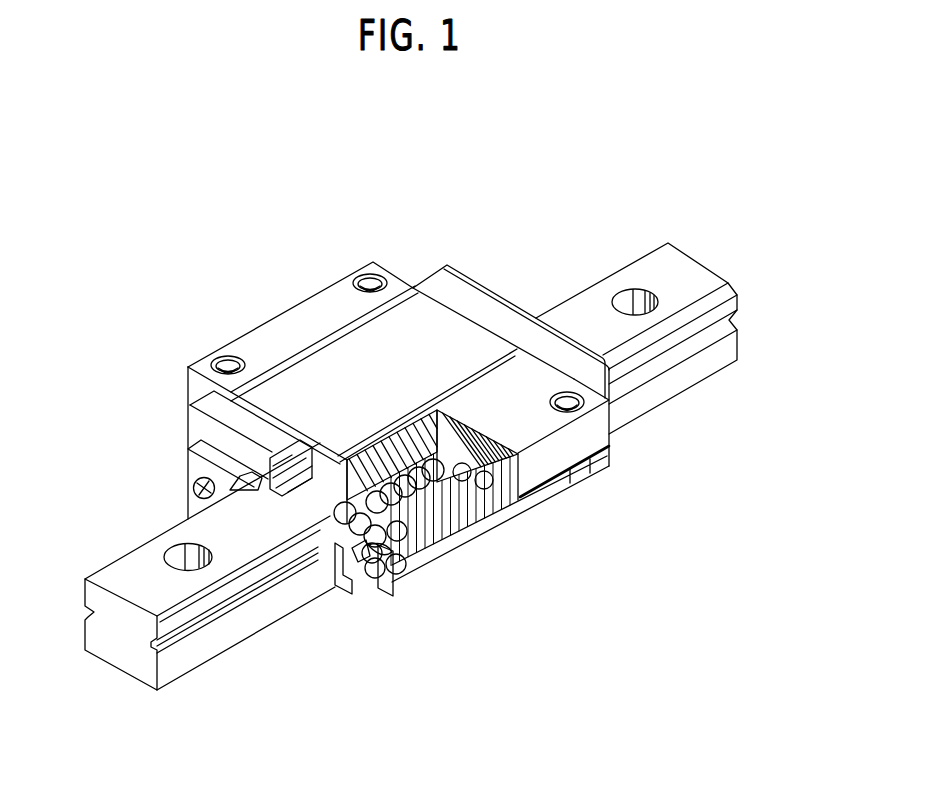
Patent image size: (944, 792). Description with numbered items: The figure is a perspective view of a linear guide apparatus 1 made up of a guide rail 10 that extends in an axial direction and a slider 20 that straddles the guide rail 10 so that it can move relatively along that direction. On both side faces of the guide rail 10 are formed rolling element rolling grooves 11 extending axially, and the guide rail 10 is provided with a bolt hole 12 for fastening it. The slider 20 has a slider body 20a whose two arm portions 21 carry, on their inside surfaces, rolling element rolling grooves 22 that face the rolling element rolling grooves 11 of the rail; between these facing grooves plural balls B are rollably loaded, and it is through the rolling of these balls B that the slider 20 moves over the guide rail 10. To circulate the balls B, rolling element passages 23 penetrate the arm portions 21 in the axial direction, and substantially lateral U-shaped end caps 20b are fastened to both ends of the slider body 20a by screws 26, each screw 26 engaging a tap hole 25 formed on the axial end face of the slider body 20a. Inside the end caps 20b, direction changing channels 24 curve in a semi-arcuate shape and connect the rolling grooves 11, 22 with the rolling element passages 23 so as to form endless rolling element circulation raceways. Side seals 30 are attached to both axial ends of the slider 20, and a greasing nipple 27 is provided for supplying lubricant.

The linear guide apparatus 1 is at (489, 191).
The guide rail 10 is at (680, 257).
The rolling element rolling groove 11 is at (227, 583).
The bolt hole 12 is at (184, 560).
The slider 20 is at (472, 324).
The slider body 20a is at (360, 340).
The end cap 20b is at (438, 287).
The arm portion 21 is at (298, 327).
The rolling element rolling groove 22 is at (340, 510).
The rolling element passage 23 is at (378, 572).
The direction changing channel 24 is at (361, 541).
The tap hole 25 is at (397, 556).
The screw 26 is at (190, 492).
The greasing nipple 27 is at (247, 467).
The side seal 30 is at (527, 307).
The ball B is at (420, 487).